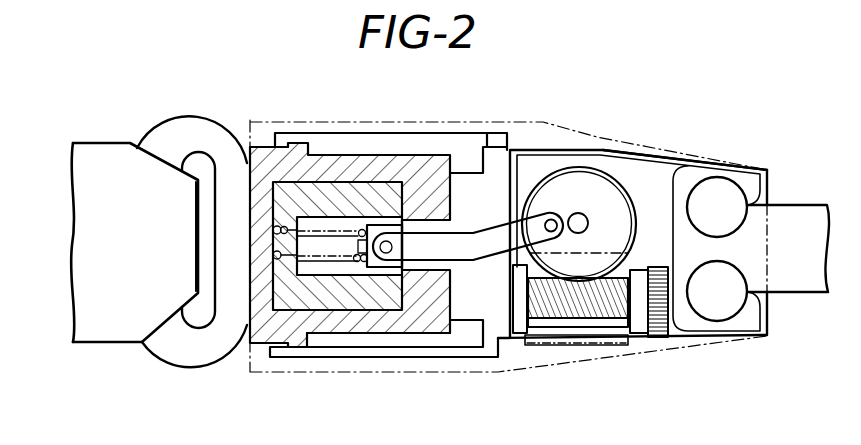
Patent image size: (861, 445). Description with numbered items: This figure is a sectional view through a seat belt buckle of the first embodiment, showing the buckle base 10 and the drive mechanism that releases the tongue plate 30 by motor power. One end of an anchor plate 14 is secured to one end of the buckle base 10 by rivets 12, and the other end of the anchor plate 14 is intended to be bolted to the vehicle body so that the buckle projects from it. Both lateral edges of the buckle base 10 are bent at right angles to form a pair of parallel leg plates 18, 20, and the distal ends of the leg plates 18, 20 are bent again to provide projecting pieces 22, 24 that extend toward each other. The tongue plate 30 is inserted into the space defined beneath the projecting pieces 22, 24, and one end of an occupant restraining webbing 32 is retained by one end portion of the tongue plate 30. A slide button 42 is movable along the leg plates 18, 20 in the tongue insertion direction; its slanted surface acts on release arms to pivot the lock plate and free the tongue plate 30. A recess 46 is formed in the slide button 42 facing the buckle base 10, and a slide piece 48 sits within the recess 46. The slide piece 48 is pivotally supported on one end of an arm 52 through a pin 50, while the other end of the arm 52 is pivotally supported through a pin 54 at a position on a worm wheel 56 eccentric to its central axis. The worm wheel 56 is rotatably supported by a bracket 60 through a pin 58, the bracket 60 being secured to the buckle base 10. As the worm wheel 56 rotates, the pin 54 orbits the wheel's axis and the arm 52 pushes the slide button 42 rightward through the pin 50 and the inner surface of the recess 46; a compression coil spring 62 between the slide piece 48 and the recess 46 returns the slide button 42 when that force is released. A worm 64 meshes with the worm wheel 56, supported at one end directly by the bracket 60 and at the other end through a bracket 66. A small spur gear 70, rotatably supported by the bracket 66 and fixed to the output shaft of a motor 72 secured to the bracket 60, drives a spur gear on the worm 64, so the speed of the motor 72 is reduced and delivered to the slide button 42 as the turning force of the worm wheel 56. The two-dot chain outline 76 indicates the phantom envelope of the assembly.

The buckle base 10 is at (510, 150).
The rivets 12 is at (720, 317).
The anchor plate 14 is at (783, 287).
The leg plate 18 is at (420, 357).
The leg plate 20 is at (483, 133).
The projecting piece 22 is at (323, 347).
The projecting piece 24 is at (410, 143).
The tongue plate 30 is at (193, 128).
The occupant restraining webbing 32 is at (113, 160).
The slide button 42 is at (380, 333).
The recess 46 is at (362, 155).
The slide piece 48 is at (388, 270).
The pin 50 is at (392, 247).
The arm 52 is at (475, 240).
The pin 54 is at (553, 218).
The worm wheel 56 is at (634, 207).
The pin 58 is at (580, 213).
The bracket 60 is at (612, 165).
The compression coil spring 62 is at (298, 266).
The worm 64 is at (580, 322).
The bracket 66 is at (637, 333).
The small spur gear 70 is at (662, 318).
The motor 72 is at (535, 341).
The phantom outline 76 is at (560, 131).